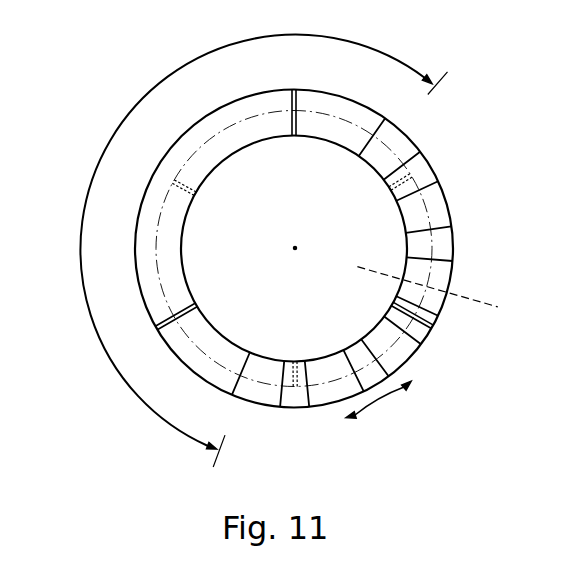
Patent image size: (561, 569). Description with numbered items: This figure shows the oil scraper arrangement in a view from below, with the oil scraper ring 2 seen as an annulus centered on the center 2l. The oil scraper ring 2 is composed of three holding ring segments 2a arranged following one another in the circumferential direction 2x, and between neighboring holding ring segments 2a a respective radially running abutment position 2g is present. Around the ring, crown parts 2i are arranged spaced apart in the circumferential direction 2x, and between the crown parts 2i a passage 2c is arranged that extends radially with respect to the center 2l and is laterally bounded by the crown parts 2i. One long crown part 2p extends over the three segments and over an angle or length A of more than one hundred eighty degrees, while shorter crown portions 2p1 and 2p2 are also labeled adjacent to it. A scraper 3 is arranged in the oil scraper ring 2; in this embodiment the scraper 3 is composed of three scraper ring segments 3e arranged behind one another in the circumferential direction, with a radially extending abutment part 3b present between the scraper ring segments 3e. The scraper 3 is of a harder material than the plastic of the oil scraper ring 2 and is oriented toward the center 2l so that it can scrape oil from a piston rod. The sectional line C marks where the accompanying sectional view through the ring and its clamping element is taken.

The oil scraper ring 2 is at (423, 110).
The holding ring segment 2a is at (225, 118).
The crown part 2i is at (423, 168).
The abutment position 2g is at (296, 100).
The long crown part 2p is at (143, 218).
The core segment 2p1 is at (200, 365).
The core segment 2p2 is at (355, 113).
The passage 2c is at (260, 366).
The center 2l is at (300, 243).
The circumferential direction 2x is at (402, 392).
The scraper 3 is at (294, 249).
The abutment part 3b is at (411, 193).
The scraper ring segment 3e is at (433, 220).
The angle and/or length A is at (84, 300).
The sectional line C- C is at (364, 265).